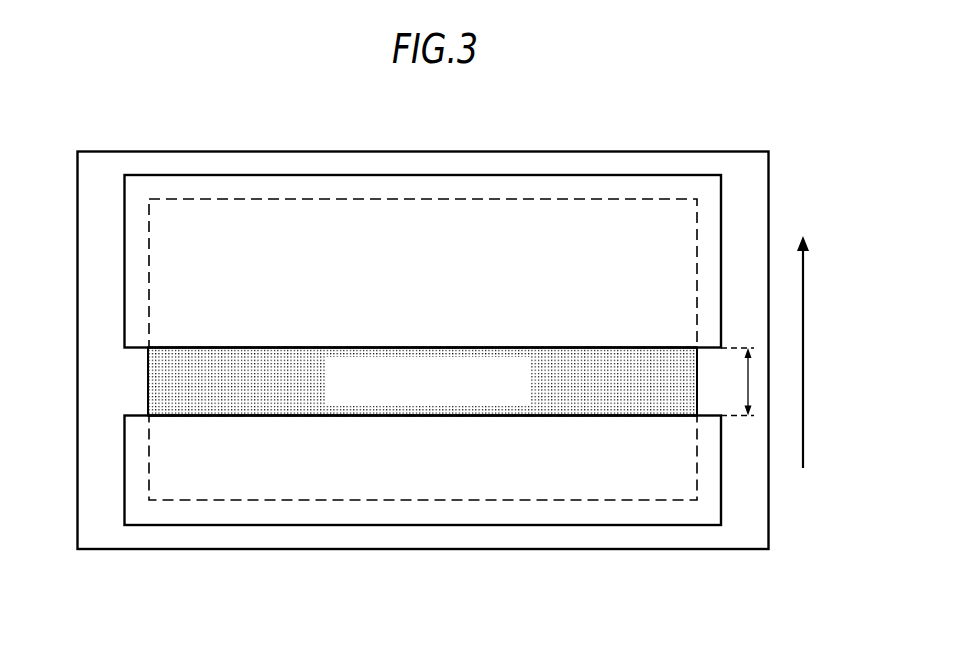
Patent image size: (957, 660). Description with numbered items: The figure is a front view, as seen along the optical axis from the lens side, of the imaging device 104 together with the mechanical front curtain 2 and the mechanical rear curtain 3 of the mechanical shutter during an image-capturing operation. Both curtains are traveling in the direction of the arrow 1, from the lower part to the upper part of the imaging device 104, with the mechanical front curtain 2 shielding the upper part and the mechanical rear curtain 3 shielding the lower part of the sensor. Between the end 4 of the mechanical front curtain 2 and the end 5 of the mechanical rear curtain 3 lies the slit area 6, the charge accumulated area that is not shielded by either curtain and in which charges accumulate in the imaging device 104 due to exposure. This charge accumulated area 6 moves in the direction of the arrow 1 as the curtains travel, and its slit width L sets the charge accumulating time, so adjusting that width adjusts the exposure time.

The arrow 1 is at (803, 354).
The mechanical front curtain 2 is at (421, 175).
The mechanical rear curtain 3 is at (423, 525).
The end of the mechanical front curtain 4 is at (195, 346).
The end of the mechanical rear curtain 5 is at (197, 415).
The slit area 6 is at (150, 390).
The imaging device 104 is at (140, 364).